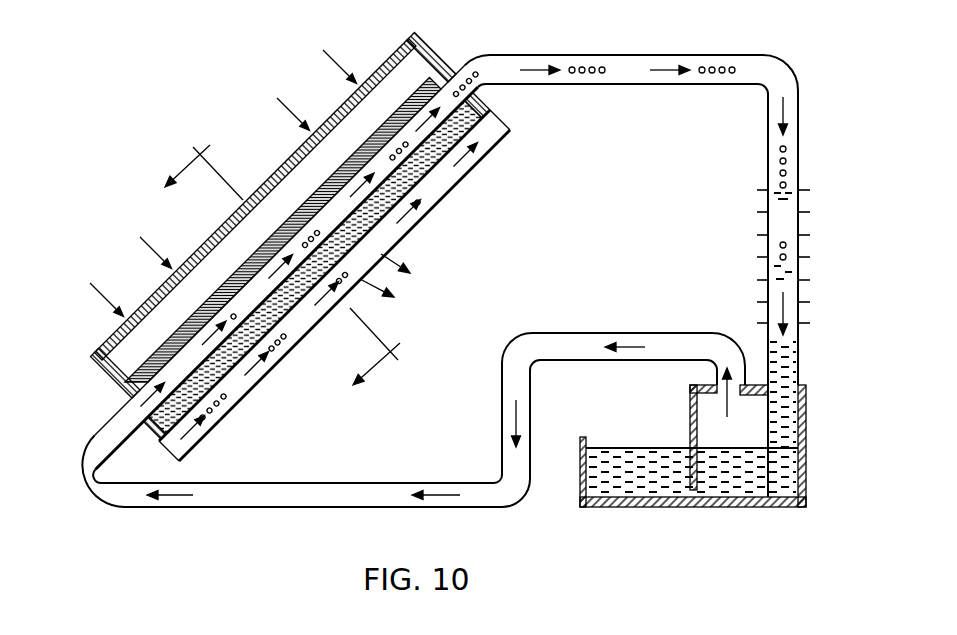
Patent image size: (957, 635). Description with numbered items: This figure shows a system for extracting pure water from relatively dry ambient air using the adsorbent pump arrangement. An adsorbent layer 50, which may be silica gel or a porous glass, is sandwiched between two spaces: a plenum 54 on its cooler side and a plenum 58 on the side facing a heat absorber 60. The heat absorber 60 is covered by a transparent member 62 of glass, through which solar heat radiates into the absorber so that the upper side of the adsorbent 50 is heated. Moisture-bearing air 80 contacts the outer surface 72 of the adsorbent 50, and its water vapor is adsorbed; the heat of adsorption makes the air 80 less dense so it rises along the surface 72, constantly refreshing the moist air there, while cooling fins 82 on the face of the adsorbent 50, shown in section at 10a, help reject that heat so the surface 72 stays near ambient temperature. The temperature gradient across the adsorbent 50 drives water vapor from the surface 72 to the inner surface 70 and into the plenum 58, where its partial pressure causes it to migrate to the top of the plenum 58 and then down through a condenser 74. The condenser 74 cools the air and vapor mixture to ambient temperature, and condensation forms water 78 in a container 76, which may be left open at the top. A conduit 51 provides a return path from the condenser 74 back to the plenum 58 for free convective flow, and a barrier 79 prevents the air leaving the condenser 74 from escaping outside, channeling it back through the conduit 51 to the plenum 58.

The cooling fin section 10a is at (275, 280).
The adsorbent layer 50 is at (430, 181).
The conduit 51 is at (446, 483).
The plenum 54 is at (301, 323).
The plenum 58 is at (208, 330).
The heat absorber 60 is at (426, 97).
The transparent member 62 is at (400, 52).
The surface 70 is at (303, 243).
The surface 72 is at (406, 227).
The condenser 74 is at (766, 256).
The container 76 is at (774, 507).
The water 78 is at (607, 448).
The barrier 79 is at (690, 407).
The air 80 is at (237, 394).
The cooling fins 82 is at (208, 438).